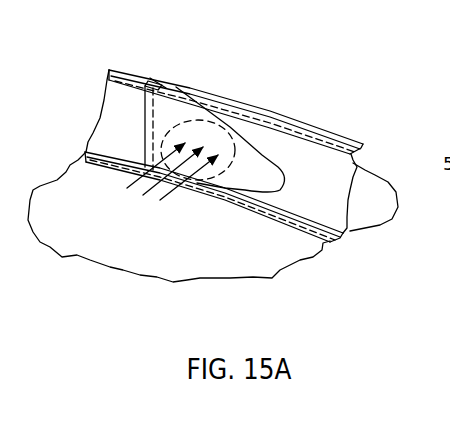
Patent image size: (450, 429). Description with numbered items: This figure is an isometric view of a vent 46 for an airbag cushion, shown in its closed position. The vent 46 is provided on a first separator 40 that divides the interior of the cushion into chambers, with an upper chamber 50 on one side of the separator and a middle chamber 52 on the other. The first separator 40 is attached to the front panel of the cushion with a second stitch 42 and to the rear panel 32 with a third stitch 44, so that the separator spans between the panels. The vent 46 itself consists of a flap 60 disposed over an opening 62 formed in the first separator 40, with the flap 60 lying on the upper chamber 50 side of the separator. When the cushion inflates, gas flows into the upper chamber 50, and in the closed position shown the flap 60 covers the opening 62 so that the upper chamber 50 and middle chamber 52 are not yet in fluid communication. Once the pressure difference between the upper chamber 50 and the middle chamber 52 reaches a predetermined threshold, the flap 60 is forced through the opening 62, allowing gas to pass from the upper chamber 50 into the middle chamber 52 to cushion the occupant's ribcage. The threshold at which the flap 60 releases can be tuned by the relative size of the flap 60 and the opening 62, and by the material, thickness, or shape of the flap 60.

The rear panel 32 is at (308, 250).
The first separator 40 is at (311, 153).
The second stitch 42 is at (134, 70).
The third stitch 44 is at (250, 214).
The vent 46 is at (262, 67).
The upper chamber 50 is at (85, 205).
The middle chamber 52 is at (378, 158).
The flap 60 is at (275, 180).
The opening 62 is at (212, 123).